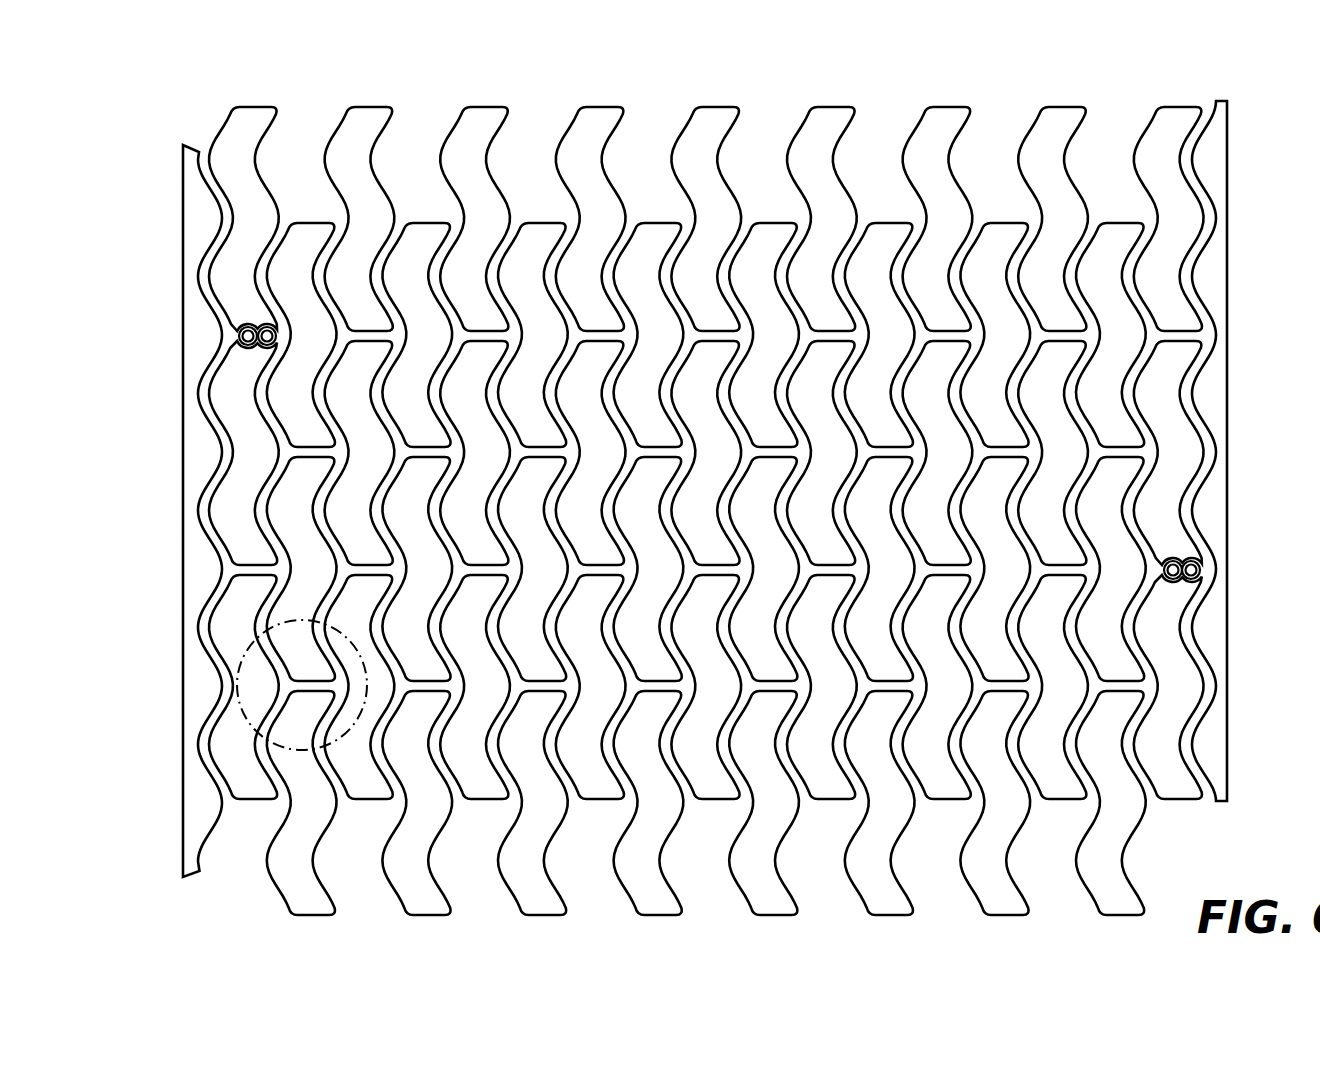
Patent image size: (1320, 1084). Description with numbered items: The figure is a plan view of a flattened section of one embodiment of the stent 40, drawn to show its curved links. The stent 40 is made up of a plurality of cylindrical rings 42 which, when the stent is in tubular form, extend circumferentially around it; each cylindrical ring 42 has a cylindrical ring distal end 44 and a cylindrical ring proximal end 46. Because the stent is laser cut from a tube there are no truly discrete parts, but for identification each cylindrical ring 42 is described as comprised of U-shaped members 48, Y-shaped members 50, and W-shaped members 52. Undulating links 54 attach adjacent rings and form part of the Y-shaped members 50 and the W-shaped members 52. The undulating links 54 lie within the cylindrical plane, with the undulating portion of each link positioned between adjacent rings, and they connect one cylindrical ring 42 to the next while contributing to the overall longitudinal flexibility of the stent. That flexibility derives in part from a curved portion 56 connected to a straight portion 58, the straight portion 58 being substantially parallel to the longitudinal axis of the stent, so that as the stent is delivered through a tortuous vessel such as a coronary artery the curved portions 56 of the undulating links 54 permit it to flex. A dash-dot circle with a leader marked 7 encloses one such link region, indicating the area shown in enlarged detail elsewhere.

The stent 40 is at (473, 86).
The cylindrical ring 42 is at (604, 228).
The cylindrical ring distal end 44 is at (1240, 448).
The cylindrical ring proximal end 46 is at (185, 514).
The U-shaped member 48 is at (773, 747).
The Y-shaped member 50 is at (866, 692).
The W-shaped member 52 is at (923, 688).
The undulating link 54 is at (1000, 693).
The curved portion 56 is at (1147, 716).
The straight portion 58 is at (1138, 683).
The detail view circle (FIG. 7) 7 is at (327, 757).